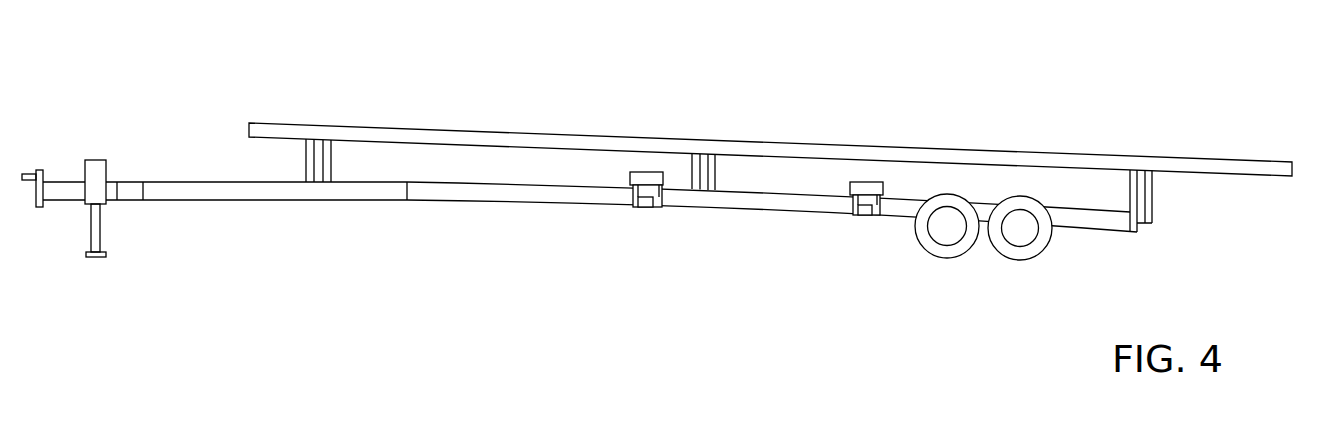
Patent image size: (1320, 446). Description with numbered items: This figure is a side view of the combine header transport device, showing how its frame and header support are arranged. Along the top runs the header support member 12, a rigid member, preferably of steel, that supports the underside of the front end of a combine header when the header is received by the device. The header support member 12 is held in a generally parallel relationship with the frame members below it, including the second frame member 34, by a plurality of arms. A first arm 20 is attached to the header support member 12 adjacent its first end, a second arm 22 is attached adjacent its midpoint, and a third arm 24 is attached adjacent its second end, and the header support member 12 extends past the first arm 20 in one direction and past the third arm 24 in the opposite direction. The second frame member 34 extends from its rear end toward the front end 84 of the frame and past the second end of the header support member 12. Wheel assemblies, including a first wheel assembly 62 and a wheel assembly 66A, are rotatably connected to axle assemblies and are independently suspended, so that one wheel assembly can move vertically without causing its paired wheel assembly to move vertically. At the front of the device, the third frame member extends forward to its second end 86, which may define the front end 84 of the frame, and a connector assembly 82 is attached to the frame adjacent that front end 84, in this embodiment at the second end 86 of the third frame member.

The header support member 12 is at (1295, 167).
The first arm 20 is at (1155, 195).
The second arm 22 is at (715, 170).
The third arm 24 is at (332, 160).
The second frame member 34 is at (515, 195).
The first wheel assembly 62 is at (948, 250).
The wheel assembly 66A is at (1022, 255).
The connector assembly 82 is at (38, 170).
The front end of the frame 84 is at (44, 188).
The second end of the third frame member 86 is at (47, 187).